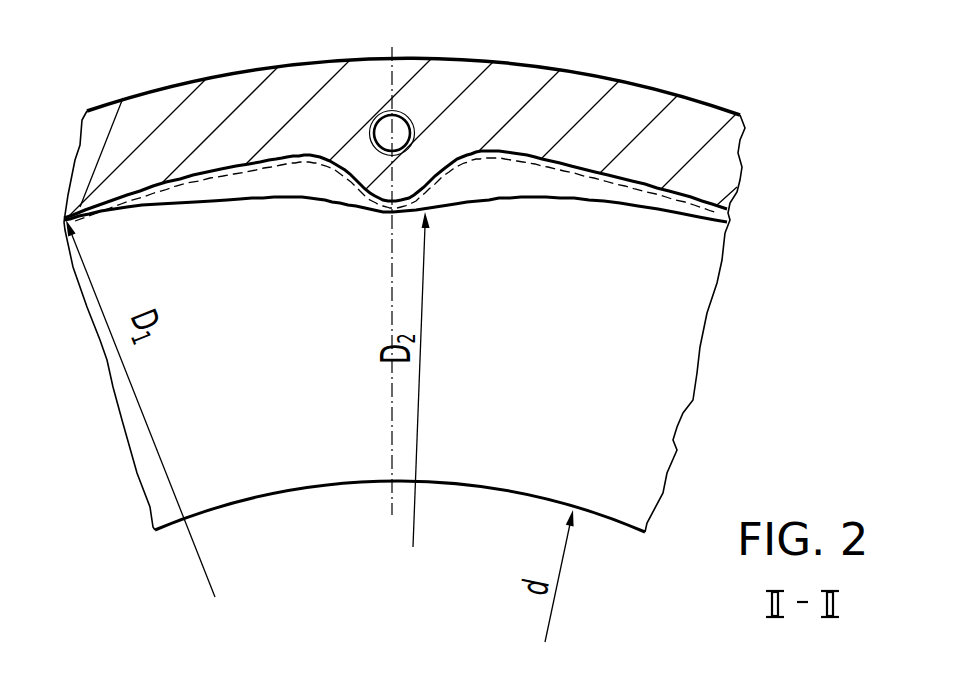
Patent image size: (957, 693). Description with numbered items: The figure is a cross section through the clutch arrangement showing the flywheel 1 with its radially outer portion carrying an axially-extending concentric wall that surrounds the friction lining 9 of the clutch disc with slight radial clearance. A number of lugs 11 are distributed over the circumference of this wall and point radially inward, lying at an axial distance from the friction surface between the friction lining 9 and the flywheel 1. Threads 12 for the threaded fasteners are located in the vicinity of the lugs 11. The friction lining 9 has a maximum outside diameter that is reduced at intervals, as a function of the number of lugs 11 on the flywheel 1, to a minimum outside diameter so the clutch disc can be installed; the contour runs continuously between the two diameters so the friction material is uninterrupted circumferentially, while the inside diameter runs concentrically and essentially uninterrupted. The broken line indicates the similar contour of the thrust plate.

The flywheel 1 is at (640, 63).
The friction lining 9 is at (680, 333).
The lug 11 is at (362, 178).
The thread 12 is at (407, 117).